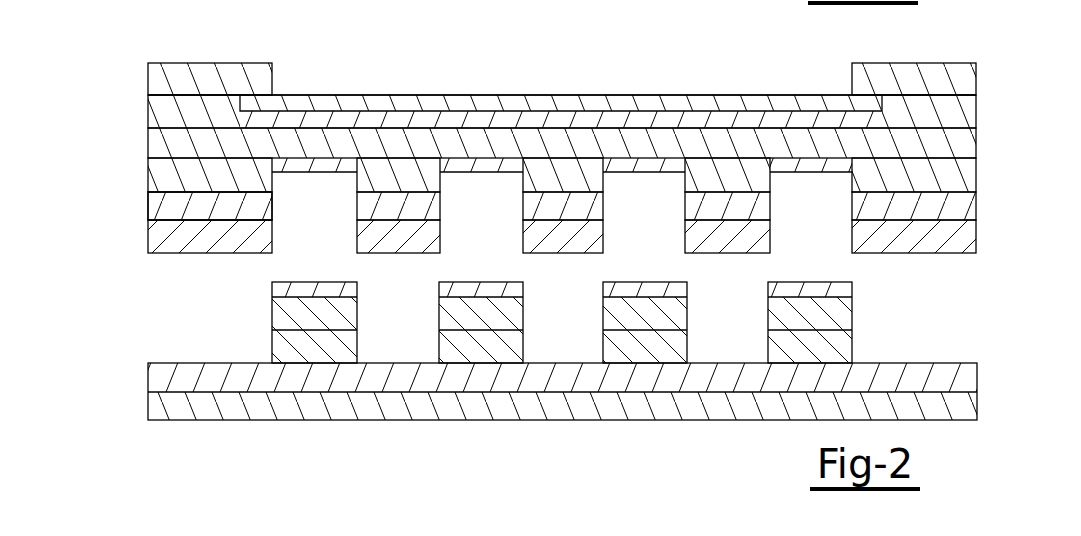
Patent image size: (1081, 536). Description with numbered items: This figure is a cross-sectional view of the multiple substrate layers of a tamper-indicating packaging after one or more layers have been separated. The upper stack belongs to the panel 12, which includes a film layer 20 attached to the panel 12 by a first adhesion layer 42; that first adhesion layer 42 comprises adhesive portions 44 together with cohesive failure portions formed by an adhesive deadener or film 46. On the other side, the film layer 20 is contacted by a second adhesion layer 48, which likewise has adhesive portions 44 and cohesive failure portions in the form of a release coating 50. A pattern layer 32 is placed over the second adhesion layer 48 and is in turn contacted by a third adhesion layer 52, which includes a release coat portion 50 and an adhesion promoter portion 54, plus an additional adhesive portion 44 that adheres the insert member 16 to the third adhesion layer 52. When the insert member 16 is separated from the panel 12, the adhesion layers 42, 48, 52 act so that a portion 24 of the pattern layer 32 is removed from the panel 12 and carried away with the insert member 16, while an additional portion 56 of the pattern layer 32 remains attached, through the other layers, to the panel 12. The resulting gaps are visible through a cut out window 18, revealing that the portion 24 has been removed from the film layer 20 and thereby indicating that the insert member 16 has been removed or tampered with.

The panel 12 is at (187, 63).
The insert member 16 is at (977, 408).
The cut out window 18 is at (336, 78).
The film layer 20 is at (976, 145).
The portion of the pattern layer 24 is at (358, 318).
The pattern layer 32 is at (976, 200).
The first adhesion layer 42 is at (500, 110).
The adhesive portions 44 is at (976, 107).
The adhesive deadener or film 46 is at (740, 95).
The second adhesion layer 48 is at (148, 176).
The release coating 50 is at (858, 168).
The third adhesion layer 52 is at (148, 238).
The adhesion promoter portion 54 is at (268, 319).
The additional portion of the pattern layer 56 is at (976, 212).